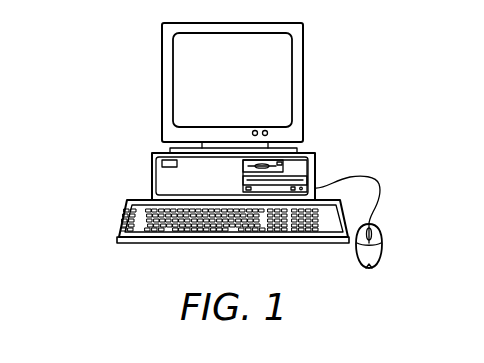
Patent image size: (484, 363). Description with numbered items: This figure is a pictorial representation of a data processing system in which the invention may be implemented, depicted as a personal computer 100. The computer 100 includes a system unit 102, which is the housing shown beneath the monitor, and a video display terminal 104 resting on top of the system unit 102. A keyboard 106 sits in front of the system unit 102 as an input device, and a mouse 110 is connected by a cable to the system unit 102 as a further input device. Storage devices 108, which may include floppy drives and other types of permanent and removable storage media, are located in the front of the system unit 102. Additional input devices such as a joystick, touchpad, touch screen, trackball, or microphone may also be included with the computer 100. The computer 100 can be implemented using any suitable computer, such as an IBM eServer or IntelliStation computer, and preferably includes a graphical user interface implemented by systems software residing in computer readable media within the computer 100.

The computer 100 is at (98, 68).
The system unit 102 is at (152, 176).
The video display terminal 104 is at (304, 83).
The keyboard 106 is at (145, 243).
The storage devices 108 is at (283, 163).
The mouse 110 is at (369, 268).